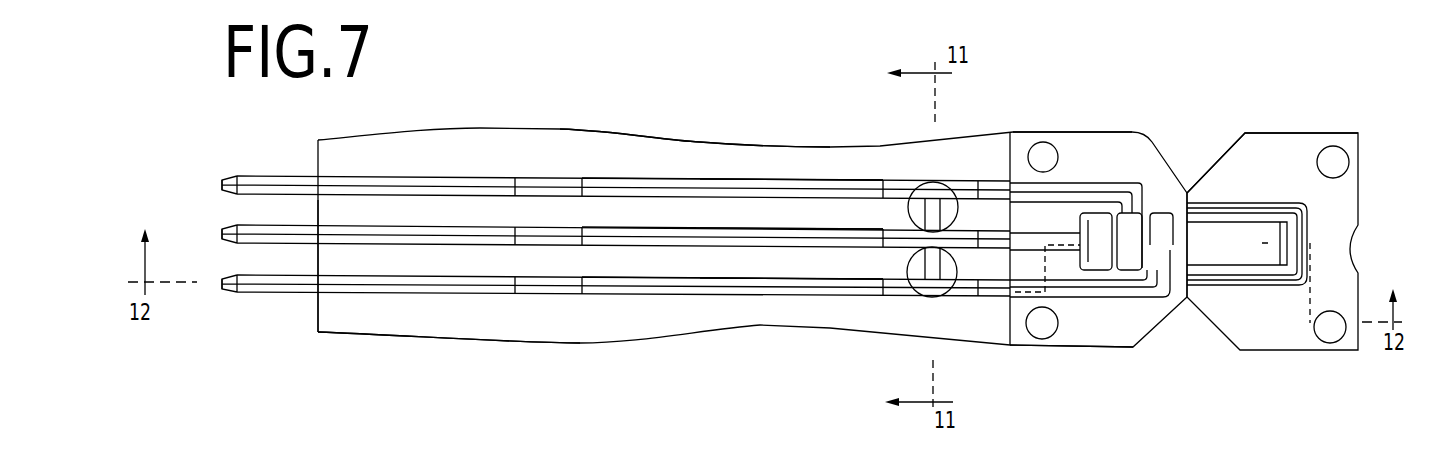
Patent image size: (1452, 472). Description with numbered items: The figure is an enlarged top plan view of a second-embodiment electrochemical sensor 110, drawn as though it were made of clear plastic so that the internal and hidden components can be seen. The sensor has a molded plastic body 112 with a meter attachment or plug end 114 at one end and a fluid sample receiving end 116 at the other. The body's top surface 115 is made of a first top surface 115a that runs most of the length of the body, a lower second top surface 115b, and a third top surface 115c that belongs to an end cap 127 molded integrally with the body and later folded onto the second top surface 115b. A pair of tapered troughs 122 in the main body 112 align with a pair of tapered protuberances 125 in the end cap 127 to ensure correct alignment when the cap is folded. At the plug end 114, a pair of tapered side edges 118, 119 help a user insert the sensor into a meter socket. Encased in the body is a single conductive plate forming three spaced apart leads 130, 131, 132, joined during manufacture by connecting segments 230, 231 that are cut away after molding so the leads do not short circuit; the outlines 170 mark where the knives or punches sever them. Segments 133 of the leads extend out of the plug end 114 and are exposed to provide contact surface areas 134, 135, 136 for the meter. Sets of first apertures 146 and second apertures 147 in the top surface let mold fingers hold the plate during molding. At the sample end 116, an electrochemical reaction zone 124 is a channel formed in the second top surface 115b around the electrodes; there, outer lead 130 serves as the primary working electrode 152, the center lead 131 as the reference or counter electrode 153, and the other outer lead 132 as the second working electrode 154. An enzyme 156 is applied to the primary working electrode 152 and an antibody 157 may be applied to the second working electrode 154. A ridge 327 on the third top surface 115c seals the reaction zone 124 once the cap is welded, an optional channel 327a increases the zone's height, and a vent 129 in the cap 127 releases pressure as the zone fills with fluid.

The electrochemical sensor 110 is at (1032, 69).
The molded plastic body 112 is at (413, 325).
The plug end 114 is at (318, 312).
The top surface 115 is at (660, 138).
The first top surface 115a is at (712, 152).
The second top surface 115b is at (1085, 340).
The third top surface 115c is at (1262, 337).
The fluid sample receiving end 116 is at (1195, 291).
The tapered side edge 118 is at (393, 133).
The tapered side edge 119 is at (336, 333).
The tapered troughs 122 is at (1040, 155).
The electrochemical reaction zone 124 is at (1172, 225).
The tapered protuberances 125 is at (1332, 148).
The end cap 127 is at (1263, 142).
The vent 129 is at (1293, 229).
The outer lead 130 is at (635, 297).
The center lead 131 is at (660, 242).
The outer lead 132 is at (658, 192).
The lead segments 133 is at (303, 173).
The contact surface area 134 is at (230, 293).
The contact surface area 135 is at (228, 243).
The contact surface area 136 is at (228, 193).
The first apertures 146 is at (523, 177).
The second apertures 147 is at (895, 180).
The primary working electrode 152 is at (720, 276).
The reference or counter electrode 153 is at (743, 226).
The second working electrode 154 is at (740, 178).
The enzyme 156 is at (1163, 253).
The antibody 157 is at (1127, 233).
The knife/punch opening outline 170 is at (952, 220).
The connecting segment 230 is at (930, 272).
The connecting segment 231 is at (930, 213).
The ridge 327 is at (1313, 208).
The channel 327a is at (1213, 233).